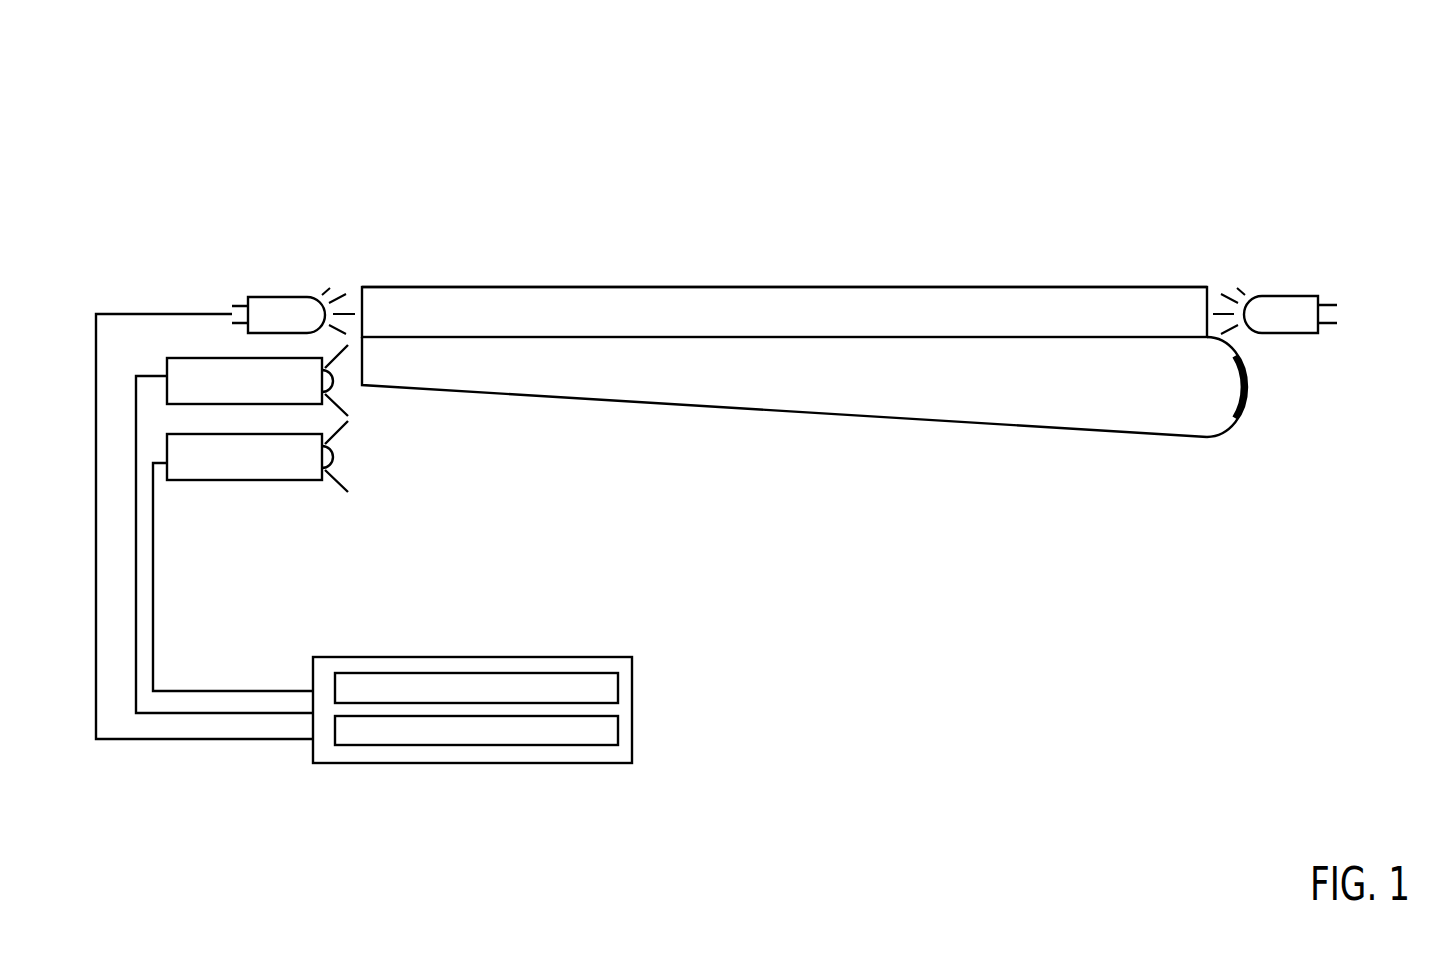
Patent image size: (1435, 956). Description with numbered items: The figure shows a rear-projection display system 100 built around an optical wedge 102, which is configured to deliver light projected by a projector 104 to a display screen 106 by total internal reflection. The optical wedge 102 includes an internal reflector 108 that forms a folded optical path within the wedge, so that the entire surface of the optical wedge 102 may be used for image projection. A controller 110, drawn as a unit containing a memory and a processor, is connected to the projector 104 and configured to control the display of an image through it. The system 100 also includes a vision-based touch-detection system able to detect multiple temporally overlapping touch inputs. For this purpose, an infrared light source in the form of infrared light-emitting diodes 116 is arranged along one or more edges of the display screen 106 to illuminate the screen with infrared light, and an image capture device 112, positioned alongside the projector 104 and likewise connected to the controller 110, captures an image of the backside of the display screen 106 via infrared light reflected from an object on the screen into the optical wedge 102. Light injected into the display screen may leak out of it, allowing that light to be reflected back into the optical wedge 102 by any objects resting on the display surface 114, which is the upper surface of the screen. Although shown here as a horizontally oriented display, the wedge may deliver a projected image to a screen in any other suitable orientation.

The rear-projection display system 100 is at (282, 172).
The optical wedge 102 is at (961, 440).
The projector 104 is at (178, 358).
The display screen 106 is at (1086, 308).
The internal reflector 108 is at (1240, 448).
The controller 110 is at (562, 657).
The image capture device 112 is at (228, 481).
The display surface 114 is at (1172, 276).
The infrared light-emitting diodes 116 is at (282, 296).